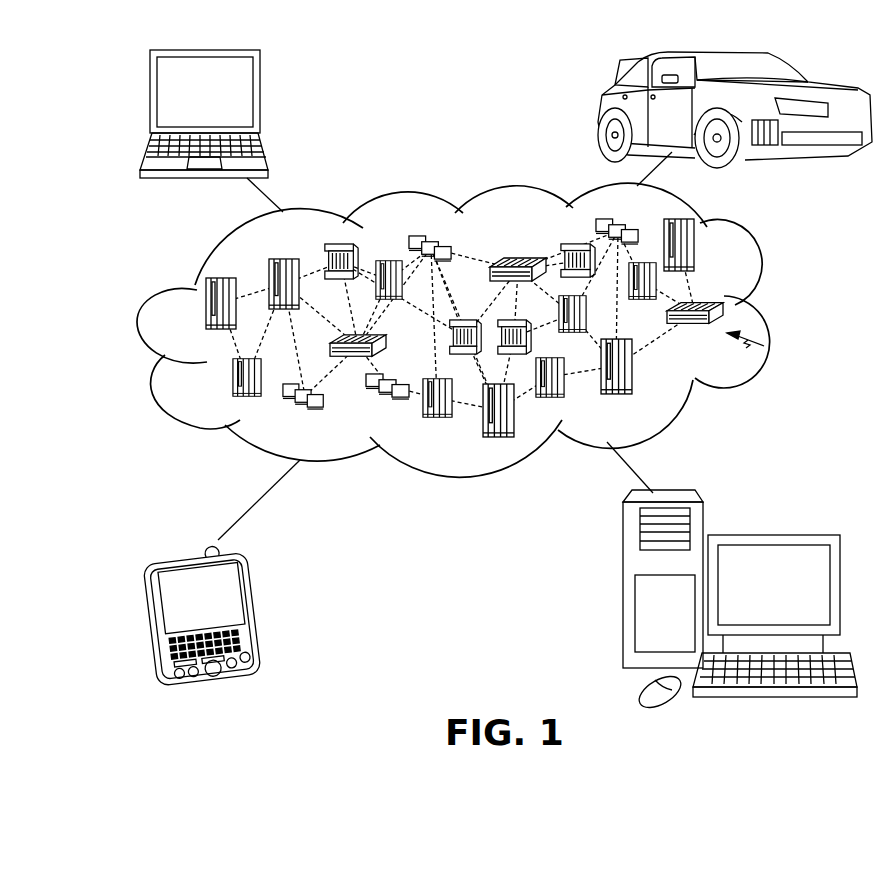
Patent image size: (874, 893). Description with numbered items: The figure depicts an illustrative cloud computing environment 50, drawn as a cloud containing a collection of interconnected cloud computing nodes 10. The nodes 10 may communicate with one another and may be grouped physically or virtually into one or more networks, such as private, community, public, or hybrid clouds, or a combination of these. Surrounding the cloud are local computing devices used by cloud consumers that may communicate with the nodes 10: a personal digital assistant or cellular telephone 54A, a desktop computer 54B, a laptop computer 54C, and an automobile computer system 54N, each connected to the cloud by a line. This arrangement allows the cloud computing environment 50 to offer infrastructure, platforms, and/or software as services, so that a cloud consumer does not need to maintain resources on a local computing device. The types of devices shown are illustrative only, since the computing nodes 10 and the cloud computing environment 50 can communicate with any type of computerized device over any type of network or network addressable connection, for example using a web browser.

The cloud computing nodes 10 is at (766, 349).
The cloud computing environment 50 is at (776, 310).
The personal digital assistant or cellular telephone 54A is at (253, 606).
The desktop computer 54B is at (772, 535).
The laptop computer 54C is at (262, 96).
The automobile computer system 54N is at (597, 112).